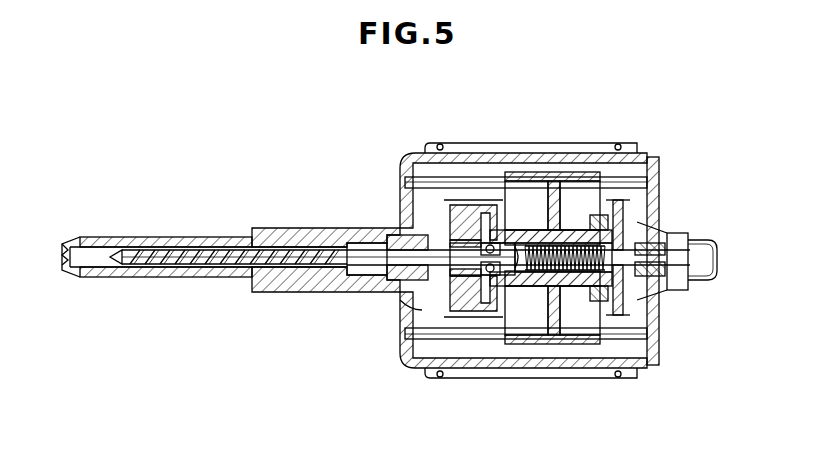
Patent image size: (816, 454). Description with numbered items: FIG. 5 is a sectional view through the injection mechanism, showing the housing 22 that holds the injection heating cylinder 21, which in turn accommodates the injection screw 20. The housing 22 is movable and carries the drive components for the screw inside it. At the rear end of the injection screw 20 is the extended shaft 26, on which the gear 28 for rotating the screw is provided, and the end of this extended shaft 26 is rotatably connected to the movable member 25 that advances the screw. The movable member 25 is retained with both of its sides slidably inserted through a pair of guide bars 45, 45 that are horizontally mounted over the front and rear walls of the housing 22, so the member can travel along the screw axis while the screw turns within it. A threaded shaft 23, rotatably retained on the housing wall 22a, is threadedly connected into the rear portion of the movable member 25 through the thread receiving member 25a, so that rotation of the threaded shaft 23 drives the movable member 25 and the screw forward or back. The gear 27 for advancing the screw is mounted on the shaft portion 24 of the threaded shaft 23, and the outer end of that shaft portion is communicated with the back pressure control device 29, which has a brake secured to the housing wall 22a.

The injection screw 20 is at (178, 250).
The injection heating cylinder 21 is at (233, 240).
The housing 22 is at (425, 155).
The housing wall 22a is at (405, 203).
The threaded shaft 23 is at (538, 300).
The shaft portion 24 is at (663, 290).
The movable member 25 is at (562, 188).
The thread receiving member 25a is at (597, 290).
The extended shaft 26 is at (462, 272).
The gear for advancing the screw 27 is at (623, 230).
The gear for rotating the screw 28 is at (465, 315).
The back pressure control device 29 is at (697, 250).
The guide bars 45 is at (490, 184).